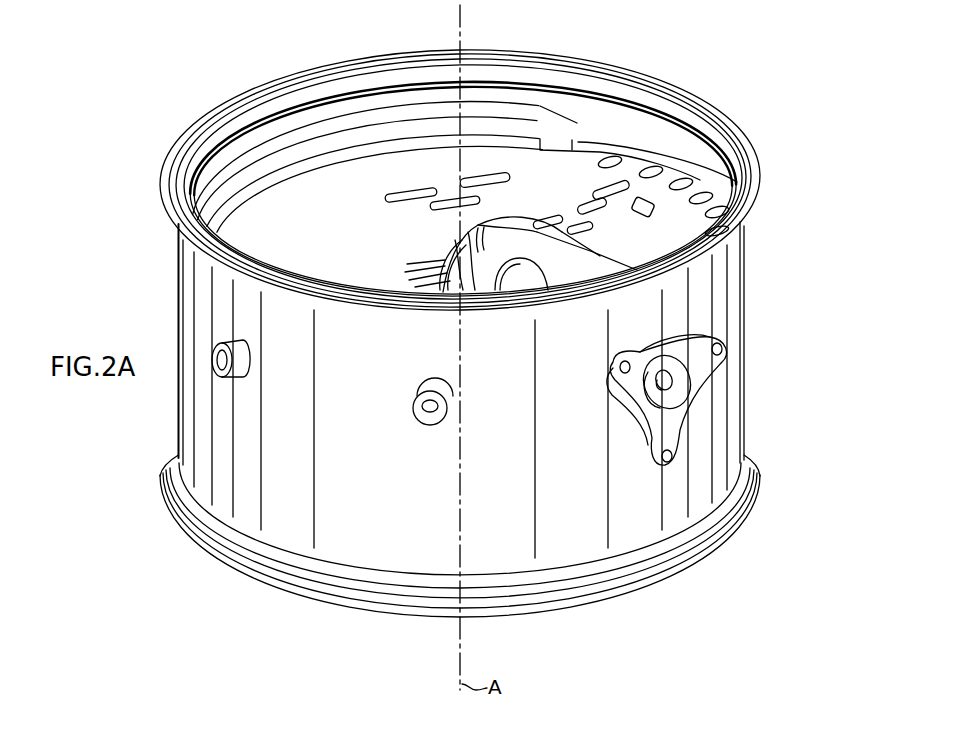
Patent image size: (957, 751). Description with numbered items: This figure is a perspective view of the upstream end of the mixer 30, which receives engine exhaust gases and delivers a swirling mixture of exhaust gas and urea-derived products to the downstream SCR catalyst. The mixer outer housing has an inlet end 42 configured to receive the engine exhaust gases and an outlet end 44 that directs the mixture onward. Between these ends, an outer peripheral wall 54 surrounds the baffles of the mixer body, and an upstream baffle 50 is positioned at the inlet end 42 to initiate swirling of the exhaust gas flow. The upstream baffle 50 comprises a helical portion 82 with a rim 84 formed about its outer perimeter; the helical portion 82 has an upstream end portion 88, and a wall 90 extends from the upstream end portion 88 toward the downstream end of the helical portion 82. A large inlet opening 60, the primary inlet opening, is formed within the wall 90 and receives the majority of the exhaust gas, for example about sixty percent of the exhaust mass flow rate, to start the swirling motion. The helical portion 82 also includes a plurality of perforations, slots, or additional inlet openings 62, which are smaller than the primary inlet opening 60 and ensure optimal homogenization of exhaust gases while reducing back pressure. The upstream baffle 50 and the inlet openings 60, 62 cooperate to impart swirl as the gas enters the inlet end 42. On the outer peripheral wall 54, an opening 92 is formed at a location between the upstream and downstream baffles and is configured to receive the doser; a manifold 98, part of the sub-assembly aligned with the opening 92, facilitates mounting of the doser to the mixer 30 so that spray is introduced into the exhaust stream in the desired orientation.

The mixer 30 is at (797, 128).
The inlet end 42 is at (684, 97).
The outlet end 44 is at (686, 573).
The upstream baffle 50 is at (556, 160).
The outer peripheral wall 54 is at (746, 268).
The large inlet opening 60 is at (525, 280).
The inlet openings 62 is at (622, 188).
The helical portion 82 is at (348, 216).
The rim 84 is at (362, 140).
The upstream end portion 88 is at (692, 230).
The wall 90 is at (470, 262).
The opening 92 is at (650, 328).
The manifold 98 is at (680, 383).